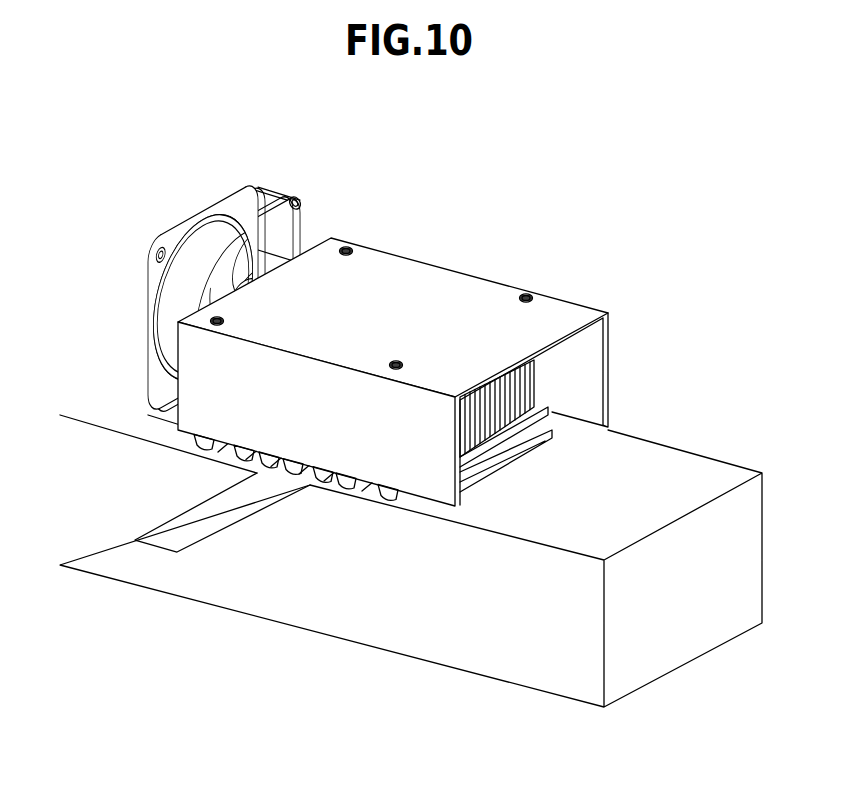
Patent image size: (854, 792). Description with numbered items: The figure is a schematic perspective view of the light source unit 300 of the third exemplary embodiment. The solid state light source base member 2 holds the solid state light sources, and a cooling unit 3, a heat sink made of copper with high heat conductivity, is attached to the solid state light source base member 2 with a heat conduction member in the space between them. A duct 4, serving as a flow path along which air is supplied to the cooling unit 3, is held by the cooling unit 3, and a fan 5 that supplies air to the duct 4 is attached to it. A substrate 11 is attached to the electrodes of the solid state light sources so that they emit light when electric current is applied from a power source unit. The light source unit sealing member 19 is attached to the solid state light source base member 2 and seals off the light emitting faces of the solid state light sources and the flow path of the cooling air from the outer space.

The light source unit 300 is at (100, 169).
The solid state light source base member 2 is at (545, 445).
The cooling unit 3 is at (512, 388).
The duct 4 is at (412, 283).
The fan 5 is at (150, 322).
The substrate 11 is at (193, 527).
The light source unit sealing member 19 is at (110, 566).